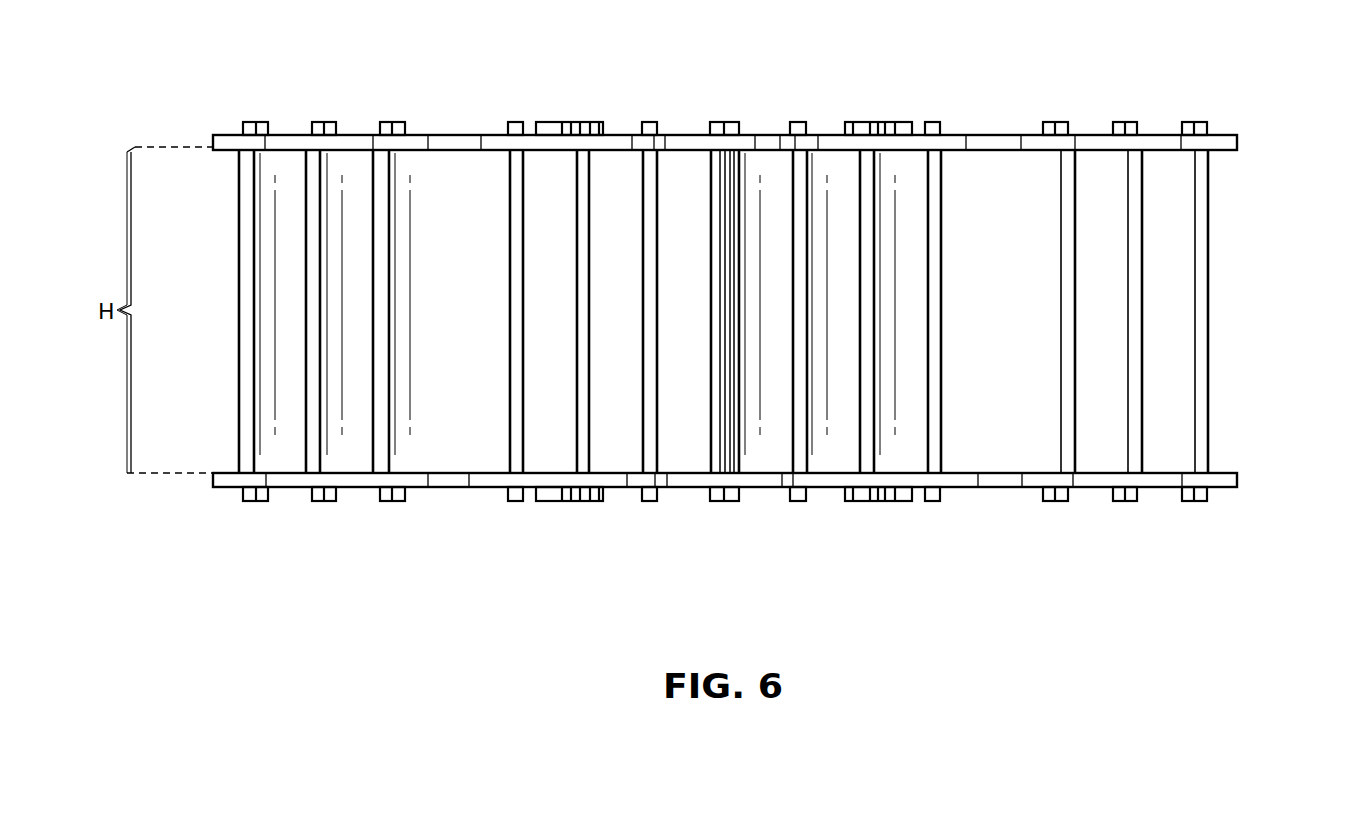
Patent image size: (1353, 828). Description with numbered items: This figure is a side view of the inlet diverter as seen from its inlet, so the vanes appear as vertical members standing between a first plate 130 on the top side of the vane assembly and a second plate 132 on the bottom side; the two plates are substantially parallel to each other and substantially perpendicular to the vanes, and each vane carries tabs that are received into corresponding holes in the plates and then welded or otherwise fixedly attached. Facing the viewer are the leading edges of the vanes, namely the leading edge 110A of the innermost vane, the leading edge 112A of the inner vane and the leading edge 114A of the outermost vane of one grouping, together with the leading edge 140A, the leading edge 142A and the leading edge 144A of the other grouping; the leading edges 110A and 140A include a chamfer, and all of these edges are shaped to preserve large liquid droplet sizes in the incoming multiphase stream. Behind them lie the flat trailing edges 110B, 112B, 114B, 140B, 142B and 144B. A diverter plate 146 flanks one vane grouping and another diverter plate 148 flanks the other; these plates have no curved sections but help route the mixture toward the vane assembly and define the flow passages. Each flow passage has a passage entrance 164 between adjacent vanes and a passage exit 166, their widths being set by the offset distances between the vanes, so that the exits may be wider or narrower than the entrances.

The first plate 130 is at (980, 133).
The second plate 132 is at (965, 489).
The leading edge of innermost vane 110 110A is at (867, 450).
The trailing edge of innermost vane 110 110B is at (1067, 222).
The leading edge of inner vane 112 112A is at (798, 453).
The trailing edge of inner vane 112 112B is at (1135, 300).
The leading edge of outermost vane 114 114A is at (740, 453).
The trailing edge of outermost vane 114 114B is at (1200, 352).
The leading edge of innermost vane 140 140A is at (583, 450).
The trailing edge of innermost vane 140 140B is at (383, 217).
The leading edge of inner vane 142 142A is at (650, 453).
The trailing edge of inner vane 142 142B is at (317, 290).
The leading edge of outermost vane 144 144A is at (715, 453).
The trailing edge of outermost vane 144 144B is at (250, 352).
The diverter plate 146 is at (942, 393).
The diverter plate 148 is at (508, 397).
The passage entrance 164 is at (681, 173).
The passage exit 166 is at (349, 449).